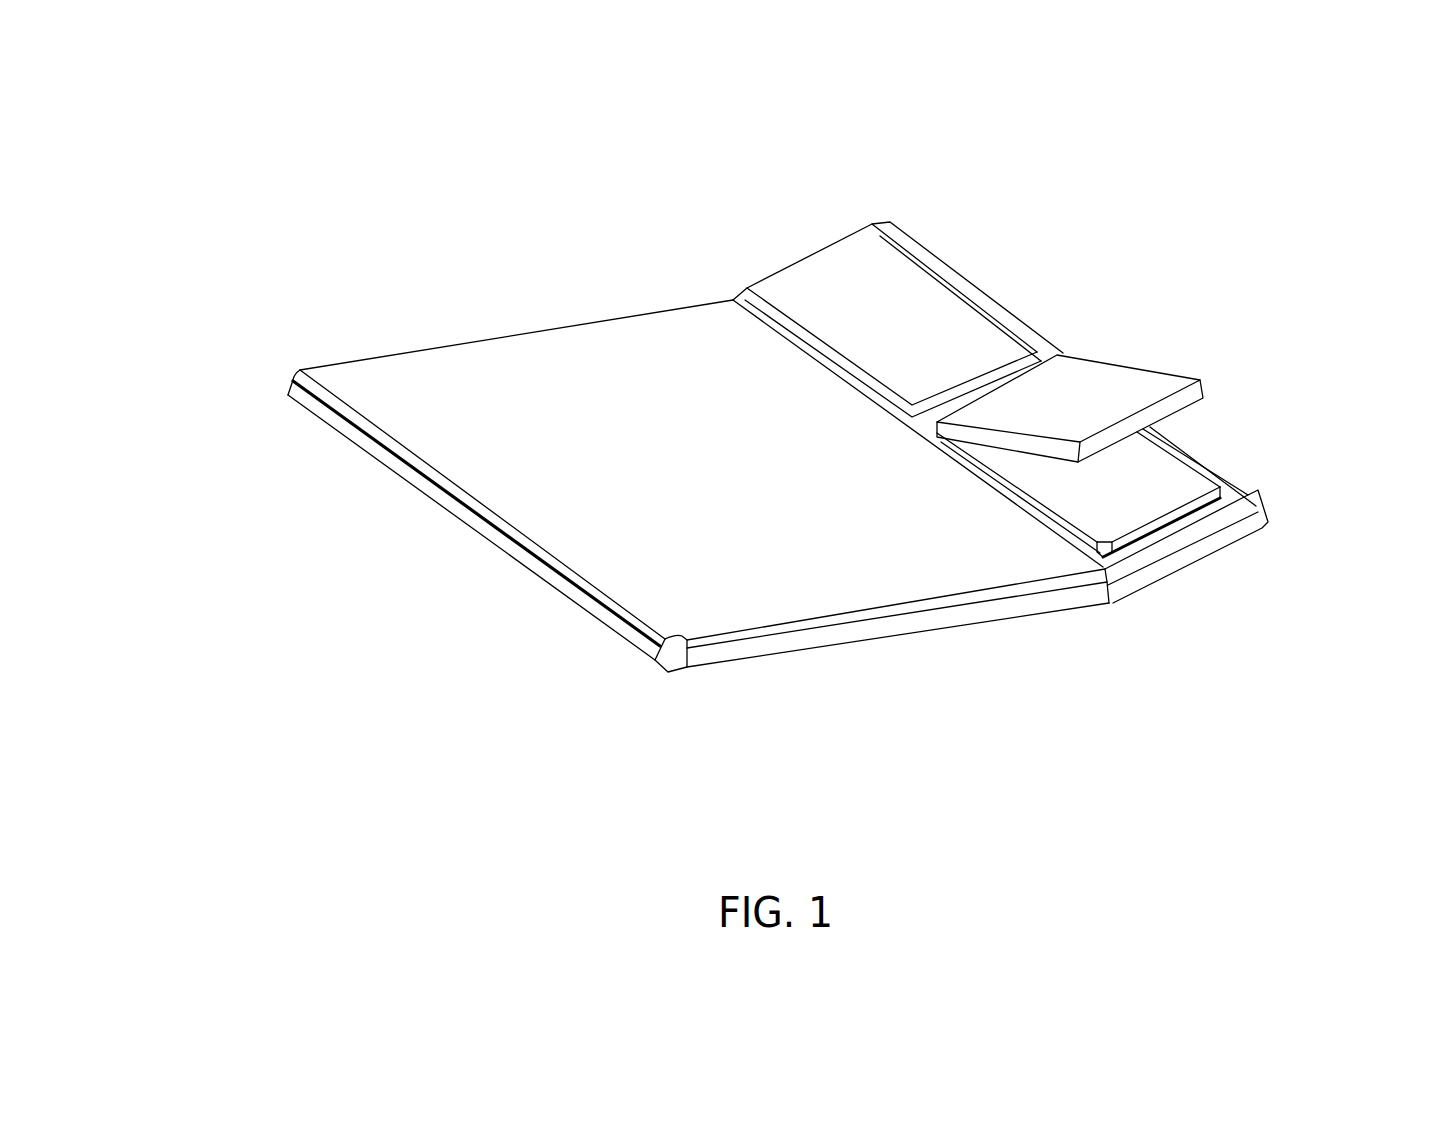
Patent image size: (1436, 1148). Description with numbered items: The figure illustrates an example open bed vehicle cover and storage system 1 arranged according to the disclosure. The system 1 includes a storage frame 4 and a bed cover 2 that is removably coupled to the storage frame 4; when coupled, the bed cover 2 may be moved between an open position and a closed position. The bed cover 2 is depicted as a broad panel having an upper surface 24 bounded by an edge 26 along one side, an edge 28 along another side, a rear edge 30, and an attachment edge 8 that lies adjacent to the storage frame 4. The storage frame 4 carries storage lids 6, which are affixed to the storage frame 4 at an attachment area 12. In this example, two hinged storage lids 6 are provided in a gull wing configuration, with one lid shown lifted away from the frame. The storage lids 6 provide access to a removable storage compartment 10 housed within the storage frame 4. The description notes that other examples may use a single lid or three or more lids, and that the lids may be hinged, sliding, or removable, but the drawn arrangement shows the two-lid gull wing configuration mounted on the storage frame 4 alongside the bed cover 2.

The open bed vehicle cover and storage system 1 is at (352, 120).
The bed cover 2 is at (790, 398).
The storage frame 4 is at (1155, 563).
The storage lids 6 is at (865, 288).
The attachment edge 8 is at (1083, 562).
The removable storage compartment 10 is at (1144, 479).
The attachment area 12 is at (935, 418).
The upper surface 24 is at (680, 513).
The edge 26 is at (402, 333).
The edge 28 is at (758, 657).
The rear edge 30 is at (575, 600).